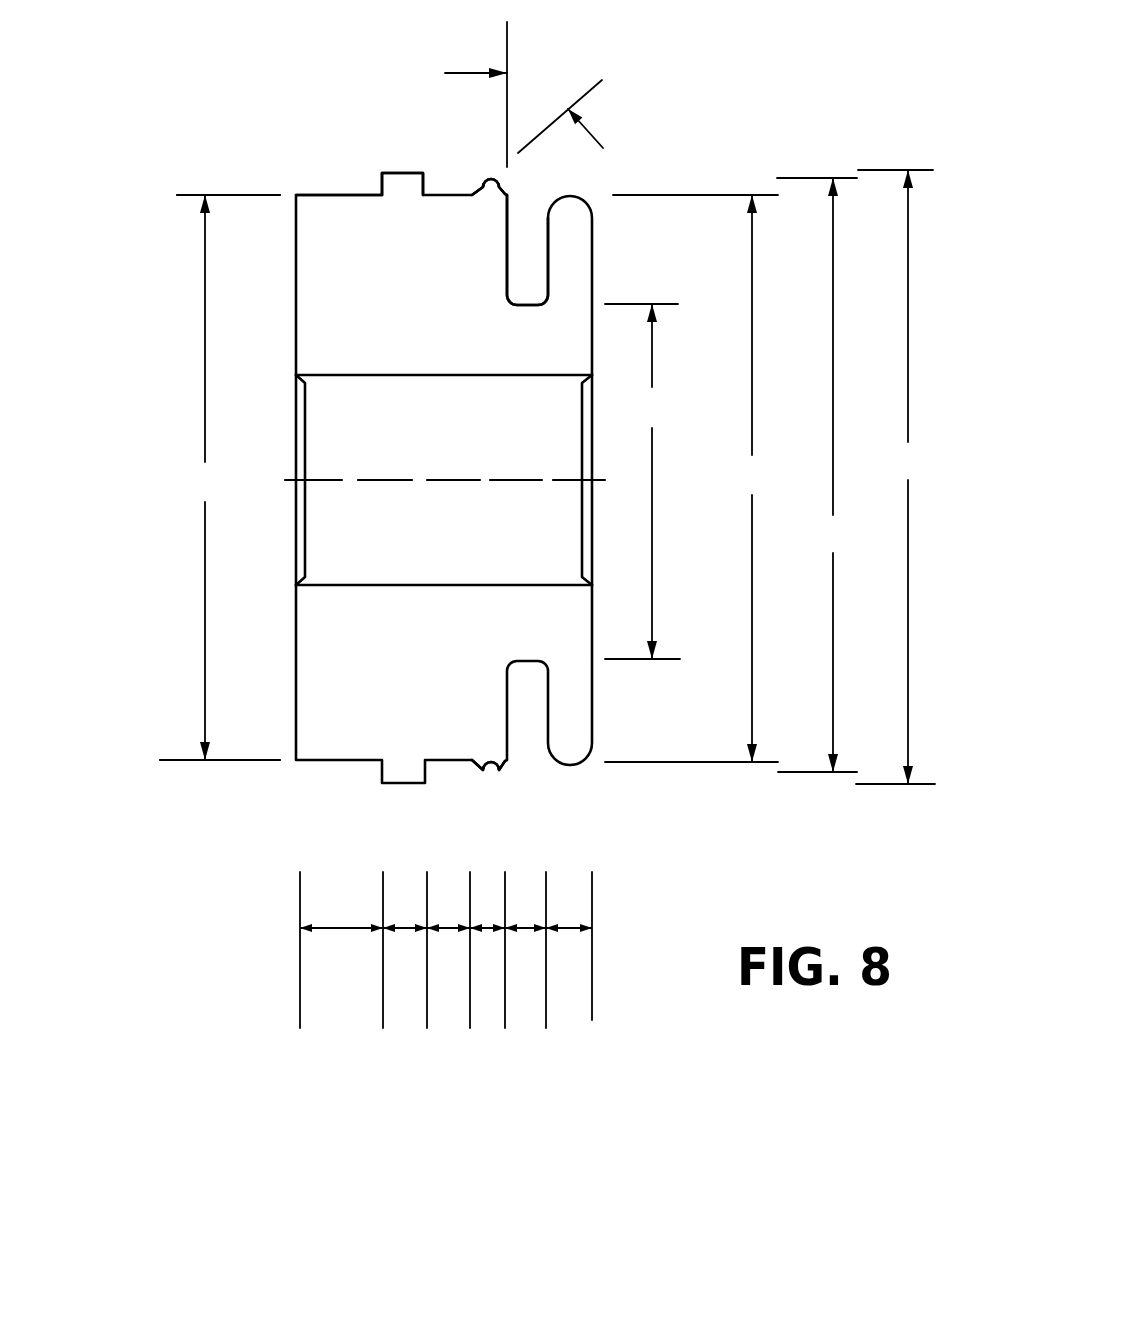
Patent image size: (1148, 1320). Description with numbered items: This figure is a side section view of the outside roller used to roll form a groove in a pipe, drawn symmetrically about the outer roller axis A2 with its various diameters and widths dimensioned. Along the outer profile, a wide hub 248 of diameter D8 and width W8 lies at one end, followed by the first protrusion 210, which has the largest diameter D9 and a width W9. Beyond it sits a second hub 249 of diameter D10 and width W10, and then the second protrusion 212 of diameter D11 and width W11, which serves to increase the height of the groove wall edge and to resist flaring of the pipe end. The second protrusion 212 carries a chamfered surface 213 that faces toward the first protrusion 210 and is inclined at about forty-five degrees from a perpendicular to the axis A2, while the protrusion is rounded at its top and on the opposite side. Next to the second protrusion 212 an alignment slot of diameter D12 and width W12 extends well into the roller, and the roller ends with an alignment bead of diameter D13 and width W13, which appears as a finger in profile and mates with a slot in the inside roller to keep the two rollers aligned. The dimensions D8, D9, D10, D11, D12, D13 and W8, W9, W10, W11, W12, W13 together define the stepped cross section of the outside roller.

The hub 248 is at (335, 192).
The first protrusion 210 is at (407, 173).
The chamfered surface 213 is at (480, 185).
The second protrusion 212 is at (507, 197).
The hub 249 is at (450, 762).
The outer roller axis A2 is at (448, 480).
The diameter of hub D8 is at (220, 477).
The diameter of protrusion D9 is at (895, 477).
The diameter of hub D10 is at (220, 477).
The diameter of protrusion D11 is at (820, 475).
The diameter of slot D12 is at (648, 481).
The diameter of alignment bead D13 is at (696, 478).
The width of hub W8 is at (352, 935).
The width of protrusion W9 is at (405, 933).
The width of hub W10 is at (447, 935).
The width of protrusion W11 is at (485, 935).
The width of slot W12 is at (527, 935).
The width of alignment bead W13 is at (568, 935).